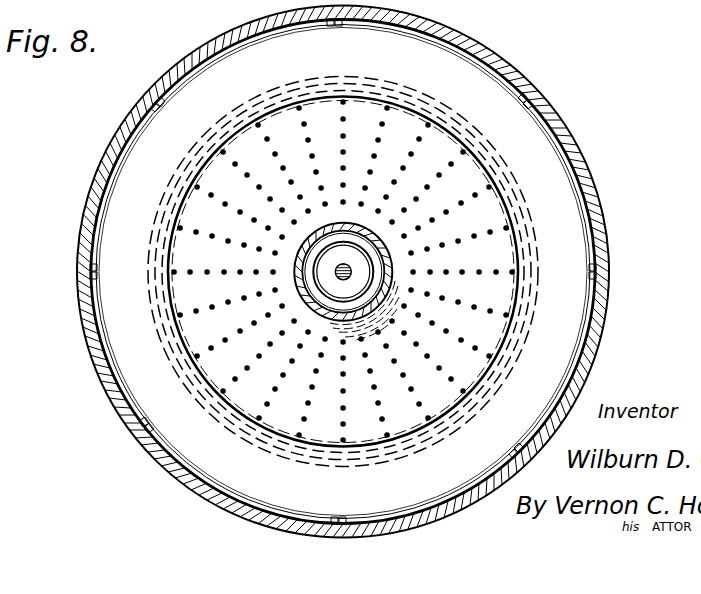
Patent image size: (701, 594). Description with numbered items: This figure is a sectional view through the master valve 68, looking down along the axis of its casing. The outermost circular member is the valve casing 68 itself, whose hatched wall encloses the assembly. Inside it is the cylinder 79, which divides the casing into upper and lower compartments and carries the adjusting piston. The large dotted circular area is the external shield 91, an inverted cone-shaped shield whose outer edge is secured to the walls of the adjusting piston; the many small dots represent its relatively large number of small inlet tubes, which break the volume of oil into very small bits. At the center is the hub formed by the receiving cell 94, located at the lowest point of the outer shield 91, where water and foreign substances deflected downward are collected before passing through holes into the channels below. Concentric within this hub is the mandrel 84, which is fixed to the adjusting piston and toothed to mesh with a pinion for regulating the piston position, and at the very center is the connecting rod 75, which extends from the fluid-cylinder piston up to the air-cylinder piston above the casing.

The master valve 68 is at (578, 151).
The cylinder 79 is at (557, 208).
The external shield 91 is at (193, 302).
The receiving cell 94 is at (391, 277).
The mandrel 84 is at (358, 265).
The connecting rod 75 is at (346, 266).